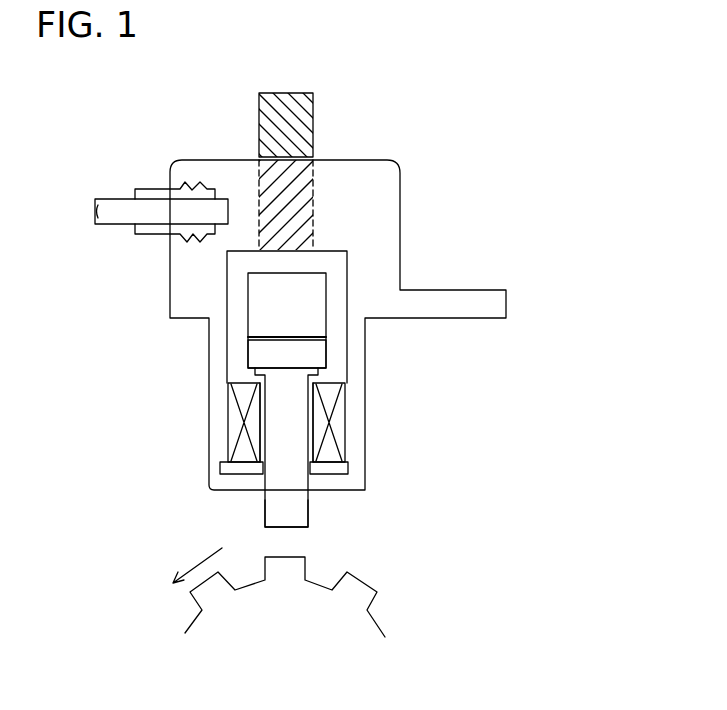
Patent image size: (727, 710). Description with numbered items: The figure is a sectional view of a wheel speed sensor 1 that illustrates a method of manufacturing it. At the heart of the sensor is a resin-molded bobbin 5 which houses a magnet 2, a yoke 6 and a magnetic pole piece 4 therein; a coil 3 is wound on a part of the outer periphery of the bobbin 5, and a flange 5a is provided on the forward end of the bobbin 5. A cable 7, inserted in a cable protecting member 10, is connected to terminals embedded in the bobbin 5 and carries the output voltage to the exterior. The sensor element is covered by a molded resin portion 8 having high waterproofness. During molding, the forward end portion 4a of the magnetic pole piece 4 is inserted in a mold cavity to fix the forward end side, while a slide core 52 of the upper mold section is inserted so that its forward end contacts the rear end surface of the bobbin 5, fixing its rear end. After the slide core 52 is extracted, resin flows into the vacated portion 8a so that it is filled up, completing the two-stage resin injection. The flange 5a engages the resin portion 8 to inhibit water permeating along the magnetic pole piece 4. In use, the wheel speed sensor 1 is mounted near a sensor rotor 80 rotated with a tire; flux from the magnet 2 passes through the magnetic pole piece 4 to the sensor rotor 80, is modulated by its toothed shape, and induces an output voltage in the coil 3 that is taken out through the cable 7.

The wheel speed sensor 1 is at (430, 139).
The magnet 2 is at (270, 350).
The coil 3 is at (235, 427).
The magnetic pole piece 4 is at (287, 447).
The forward end portion 4a is at (293, 517).
The bobbin 5 is at (333, 360).
The flange 5a is at (340, 470).
The yoke 6 is at (268, 313).
The cable 7 is at (123, 218).
The resin portion 8 is at (192, 287).
The vacated portion 8a is at (297, 221).
The cable protecting member 10 is at (153, 190).
The slide core 52 is at (270, 116).
The sensor rotor 80 is at (345, 605).